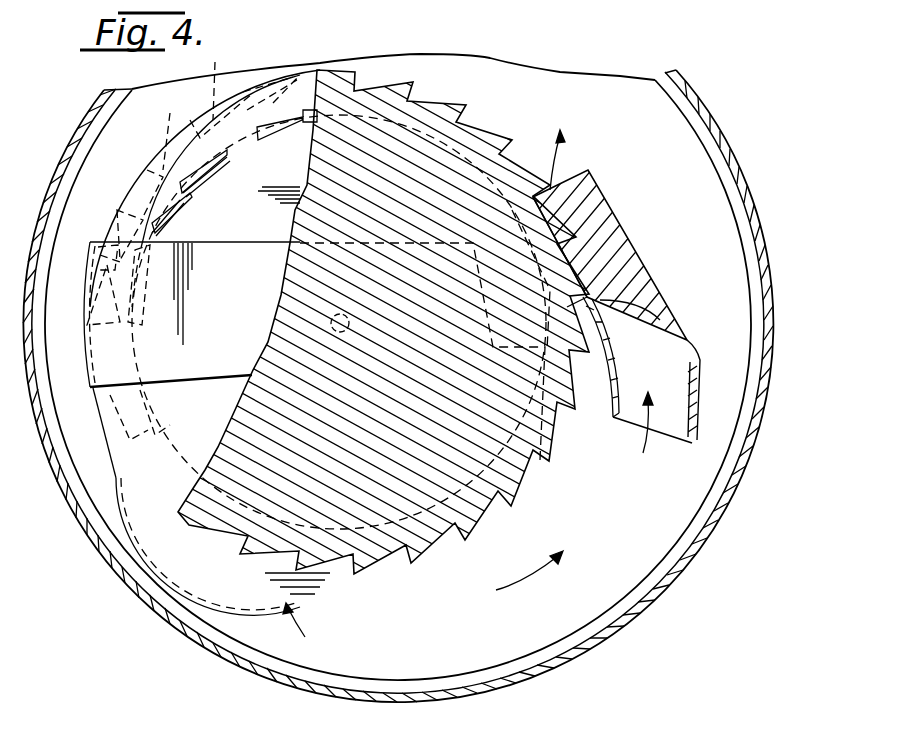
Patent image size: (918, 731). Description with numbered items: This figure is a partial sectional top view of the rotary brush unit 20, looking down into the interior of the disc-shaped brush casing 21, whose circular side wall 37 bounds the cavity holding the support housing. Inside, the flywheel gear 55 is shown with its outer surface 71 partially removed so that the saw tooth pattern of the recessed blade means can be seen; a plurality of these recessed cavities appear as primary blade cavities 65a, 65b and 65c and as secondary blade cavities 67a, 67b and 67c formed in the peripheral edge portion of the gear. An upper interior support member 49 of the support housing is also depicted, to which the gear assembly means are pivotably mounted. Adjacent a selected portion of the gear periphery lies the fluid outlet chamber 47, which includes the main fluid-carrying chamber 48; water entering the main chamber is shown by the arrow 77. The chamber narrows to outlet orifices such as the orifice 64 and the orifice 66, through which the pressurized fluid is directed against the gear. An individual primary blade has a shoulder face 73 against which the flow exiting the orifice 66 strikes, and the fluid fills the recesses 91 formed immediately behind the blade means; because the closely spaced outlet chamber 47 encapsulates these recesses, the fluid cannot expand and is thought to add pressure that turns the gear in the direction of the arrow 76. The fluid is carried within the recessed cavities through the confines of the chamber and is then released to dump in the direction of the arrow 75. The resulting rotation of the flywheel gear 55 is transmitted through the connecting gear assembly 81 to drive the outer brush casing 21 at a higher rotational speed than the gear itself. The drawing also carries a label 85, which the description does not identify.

The rotary brush unit 20 is at (724, 143).
The brush casing 21 is at (775, 264).
The circular side wall 37 is at (728, 491).
The fluid outlet chamber 47 is at (633, 227).
The main fluid-carrying chamber 48 is at (700, 353).
The upper interior support member 49 is at (261, 253).
The flywheel gear 55 is at (217, 392).
The outlet orifice 64 is at (632, 272).
The outlet orifice 66 is at (578, 318).
The recessed cavity of primary blade means 65a is at (130, 198).
The recessed cavity of primary blade means 65b is at (198, 151).
The recessed cavity of primary blade means 65c is at (248, 84).
The recessed cavity of secondary blade means 67a is at (163, 222).
The recessed cavity of secondary blade means 67b is at (192, 185).
The recessed cavity of secondary blade means 67c is at (232, 148).
The outer surface of flywheel gear 71 is at (157, 177).
The shoulder face 73 is at (452, 545).
The arrow 75 is at (564, 164).
The arrow 76 is at (534, 583).
The arrow 77 is at (643, 453).
The connecting gear assembly 81 is at (308, 632).
The lower guide arc 85 is at (157, 566).
The recesses 91 is at (620, 222).